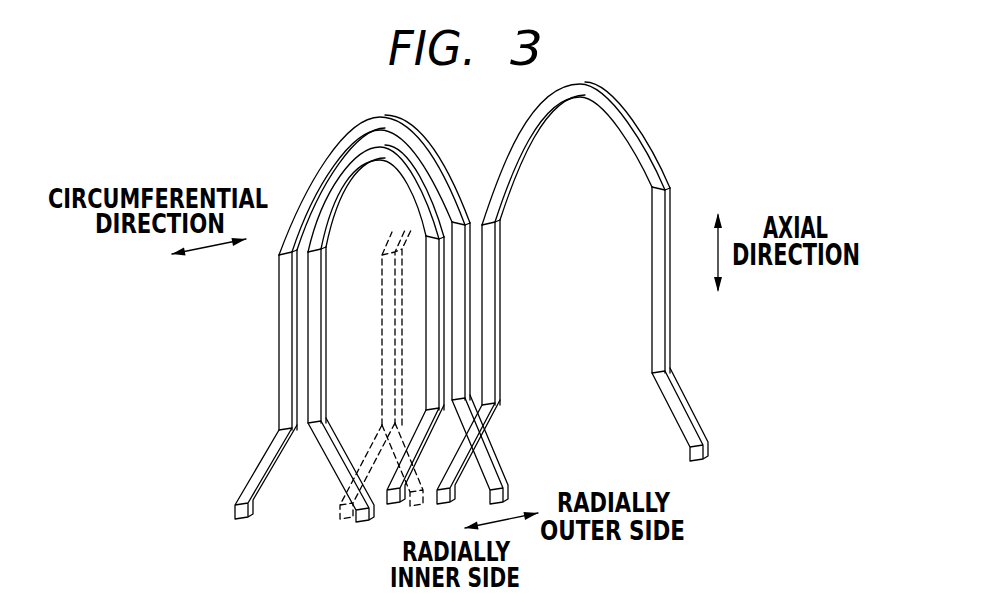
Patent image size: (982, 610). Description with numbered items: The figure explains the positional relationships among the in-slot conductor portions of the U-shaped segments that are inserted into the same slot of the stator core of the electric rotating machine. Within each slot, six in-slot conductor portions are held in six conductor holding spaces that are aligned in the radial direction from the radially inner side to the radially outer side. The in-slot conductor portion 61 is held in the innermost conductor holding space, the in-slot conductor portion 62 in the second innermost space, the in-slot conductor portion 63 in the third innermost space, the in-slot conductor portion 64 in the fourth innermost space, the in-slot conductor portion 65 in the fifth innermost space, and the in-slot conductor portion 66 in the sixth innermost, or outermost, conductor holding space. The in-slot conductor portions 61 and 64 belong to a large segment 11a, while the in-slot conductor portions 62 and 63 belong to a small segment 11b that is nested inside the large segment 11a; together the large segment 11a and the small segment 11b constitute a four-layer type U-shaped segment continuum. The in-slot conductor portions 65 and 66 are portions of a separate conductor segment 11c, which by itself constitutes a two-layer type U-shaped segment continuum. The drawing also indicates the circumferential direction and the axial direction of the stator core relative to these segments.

The large segment 11a is at (376, 301).
The small segment 11b is at (436, 332).
The conductor segment 11c is at (599, 293).
The in-slot conductor portion 61 is at (288, 358).
The in-slot conductor portion 62 is at (316, 400).
The in-slot conductor portion 63 is at (440, 376).
The in-slot conductor portion 64 is at (458, 333).
The in-slot conductor portion 65 is at (488, 300).
The in-slot conductor portion 66 is at (661, 326).